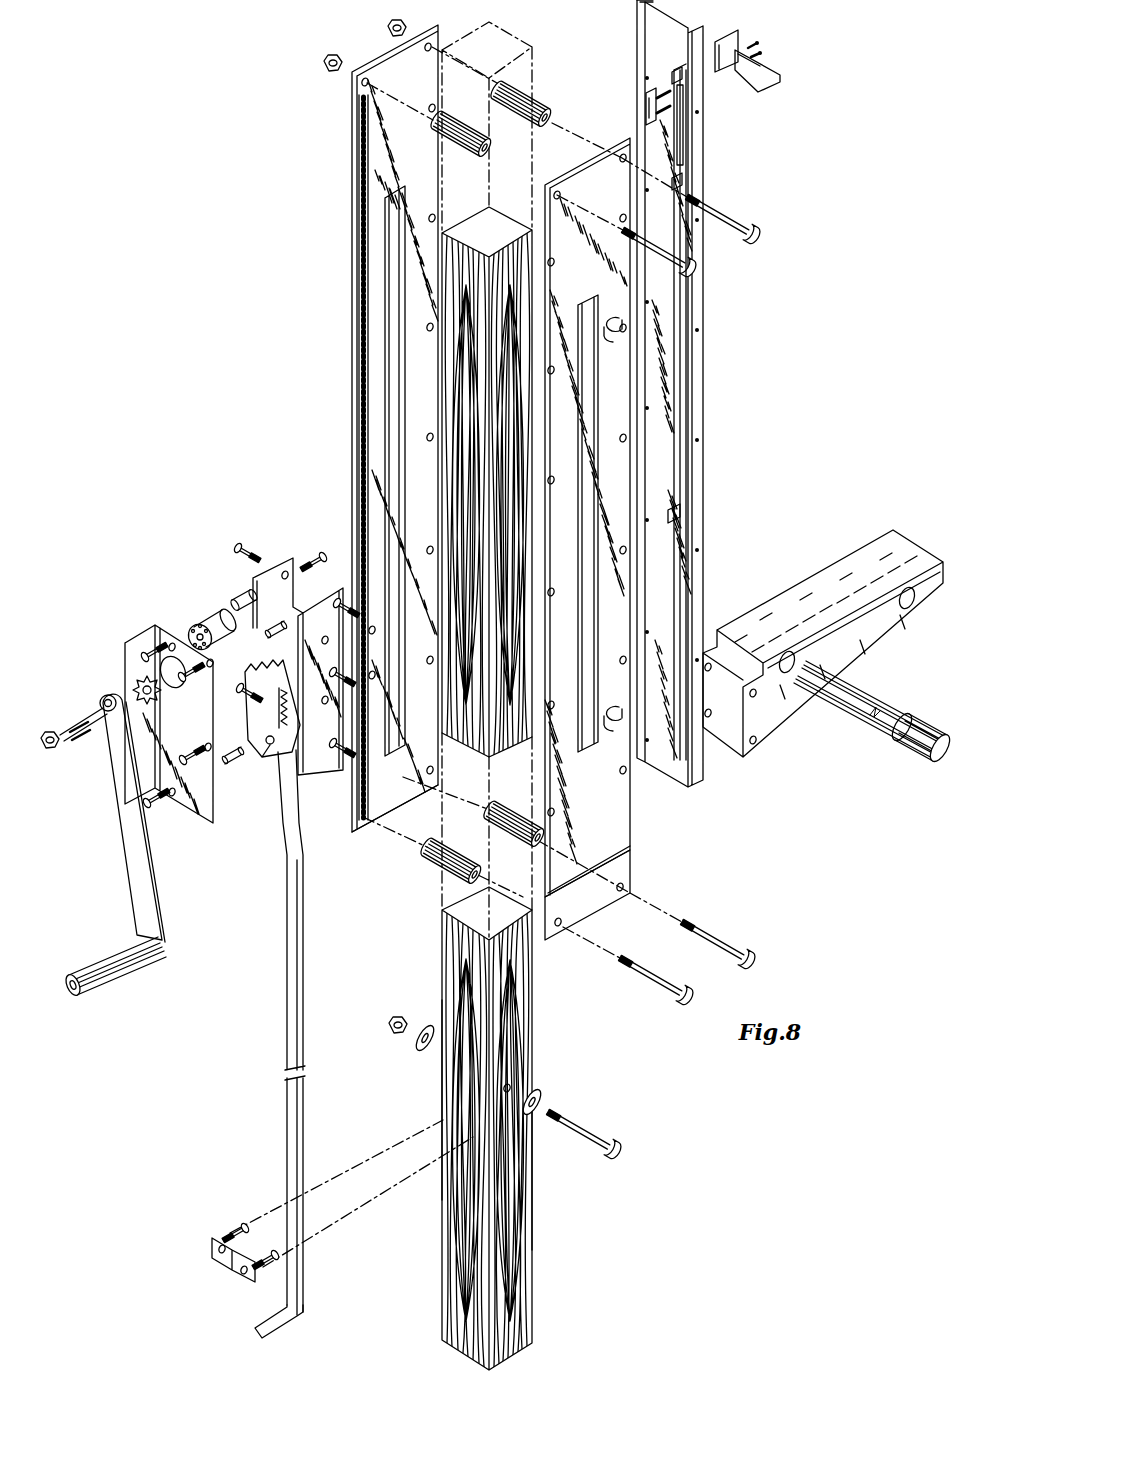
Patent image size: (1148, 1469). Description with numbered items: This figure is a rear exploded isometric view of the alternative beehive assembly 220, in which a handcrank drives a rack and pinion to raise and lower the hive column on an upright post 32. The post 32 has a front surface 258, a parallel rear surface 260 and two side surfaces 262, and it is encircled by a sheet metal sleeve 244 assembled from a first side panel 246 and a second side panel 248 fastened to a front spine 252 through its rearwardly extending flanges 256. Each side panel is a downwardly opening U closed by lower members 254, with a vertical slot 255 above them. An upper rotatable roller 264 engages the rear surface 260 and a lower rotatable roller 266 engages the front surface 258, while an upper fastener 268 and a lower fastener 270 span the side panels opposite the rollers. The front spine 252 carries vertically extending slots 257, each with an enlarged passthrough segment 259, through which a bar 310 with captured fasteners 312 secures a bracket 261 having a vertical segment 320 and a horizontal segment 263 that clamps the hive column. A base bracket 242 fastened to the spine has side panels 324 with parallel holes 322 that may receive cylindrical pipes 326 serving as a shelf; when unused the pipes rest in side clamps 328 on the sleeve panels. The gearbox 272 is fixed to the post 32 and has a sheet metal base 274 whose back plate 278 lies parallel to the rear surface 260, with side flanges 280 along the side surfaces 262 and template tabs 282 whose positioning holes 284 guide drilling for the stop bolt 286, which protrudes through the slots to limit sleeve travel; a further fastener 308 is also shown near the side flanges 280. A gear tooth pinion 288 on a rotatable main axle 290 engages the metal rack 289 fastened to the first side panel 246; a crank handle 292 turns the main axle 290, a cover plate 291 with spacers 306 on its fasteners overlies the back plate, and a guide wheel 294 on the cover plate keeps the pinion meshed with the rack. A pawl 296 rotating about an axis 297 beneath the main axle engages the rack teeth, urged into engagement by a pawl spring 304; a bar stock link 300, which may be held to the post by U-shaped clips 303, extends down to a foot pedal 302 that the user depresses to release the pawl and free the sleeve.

The post 32 is at (527, 1295).
The beehive assembly 220 is at (305, 167).
The base bracket 242 is at (836, 578).
The sleeve 244 is at (703, 330).
The first side panel 246 is at (388, 50).
The second side panel 248 is at (630, 825).
The front spine 252 is at (672, 18).
The lower members 254 is at (607, 895).
The vertical slot 255 is at (600, 410).
The rearwardly extending flanges 256 is at (640, 32).
The vertically extending slot 257 is at (675, 132).
The front surface 258 is at (532, 1000).
The passthrough segment 259 is at (673, 73).
The rear surface 260 is at (440, 1103).
The bracket 261 is at (725, 40).
The side surfaces 262 is at (437, 1078).
The horizontal segment 263 is at (768, 70).
The upper rotatable roller 264 is at (462, 150).
The lower rotatable roller 266 is at (515, 808).
The upper fastener 268 is at (513, 80).
The lower fastener 270 is at (455, 845).
The gearbox 272 is at (220, 522).
The sheet metal base 274 is at (255, 585).
The back plate 278 is at (272, 770).
The side flanges 280 is at (283, 560).
The template tabs 282 is at (372, 630).
The positioning holes 284 is at (372, 675).
The stop bolt 286 is at (578, 1125).
The gear tooth pinion 288 is at (147, 665).
The metal rack 289 is at (365, 350).
The main axle 290 is at (213, 612).
The cover plate 291 is at (200, 810).
The crank handle 292 is at (143, 895).
The guide wheel 294 is at (193, 625).
The pawl 296 is at (245, 695).
The pawl axle axis 297 is at (260, 755).
The bar stock link 300 is at (285, 1060).
The foot pedal 302 is at (285, 1325).
The U-shaped clips 303 is at (228, 1262).
The pawl spring 304 is at (296, 745).
The spacers 306 is at (235, 598).
The fastener 308 is at (315, 560).
The bar 310 is at (647, 100).
The fastener 312 is at (648, 117).
The vertical segment 320 is at (740, 50).
The holes 322 is at (908, 608).
The side panels 324 is at (812, 700).
The cylindrical pipes 326 is at (890, 705).
The side clamps 328 is at (620, 322).